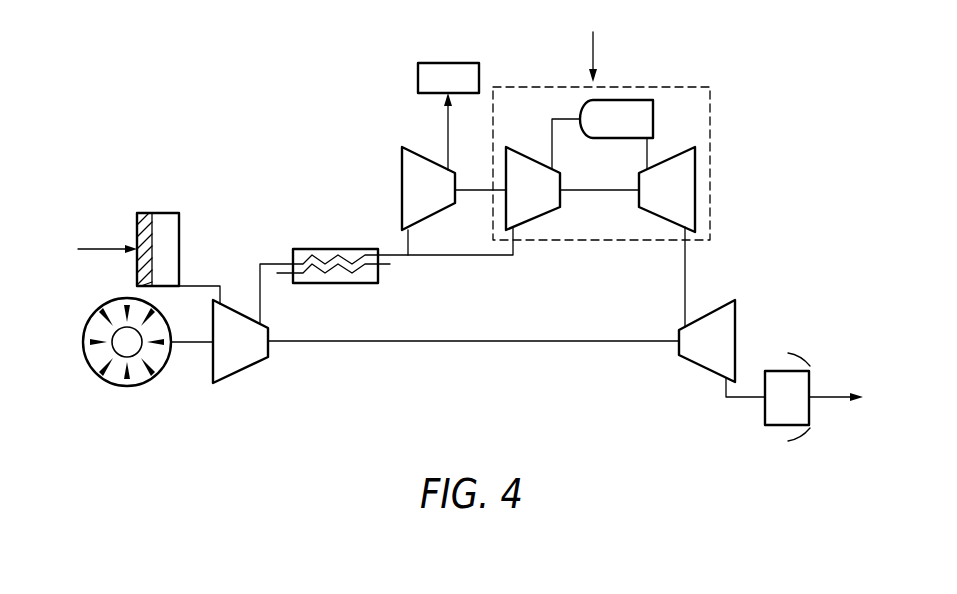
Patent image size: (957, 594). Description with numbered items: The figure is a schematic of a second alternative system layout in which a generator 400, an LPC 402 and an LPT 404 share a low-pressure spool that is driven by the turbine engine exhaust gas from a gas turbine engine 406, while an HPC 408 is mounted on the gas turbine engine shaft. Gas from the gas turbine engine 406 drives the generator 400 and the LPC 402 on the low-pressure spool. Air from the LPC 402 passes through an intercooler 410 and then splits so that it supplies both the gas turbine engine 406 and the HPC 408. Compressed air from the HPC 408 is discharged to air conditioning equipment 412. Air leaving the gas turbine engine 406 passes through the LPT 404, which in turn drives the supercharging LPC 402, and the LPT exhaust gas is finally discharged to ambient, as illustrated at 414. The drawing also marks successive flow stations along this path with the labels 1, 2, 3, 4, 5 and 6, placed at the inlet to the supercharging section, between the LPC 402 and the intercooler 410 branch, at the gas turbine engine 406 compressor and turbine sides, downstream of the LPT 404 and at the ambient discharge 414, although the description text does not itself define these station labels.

The generator 400 is at (127, 386).
The LPC 402 is at (240, 370).
The LPT 404 is at (705, 368).
The gas turbine engine 406 is at (651, 125).
The HPC 408 is at (413, 150).
The intercooler 410 is at (333, 249).
The air conditioning equipment 412 is at (450, 63).
The LPT exhaust discharge to ambient 414 is at (765, 413).
The inlet station 1 is at (122, 238).
The station 2 is at (199, 300).
The station 3 is at (557, 144).
The station 4 is at (658, 153).
The station 5 is at (745, 401).
The outlet station 6 is at (836, 378).